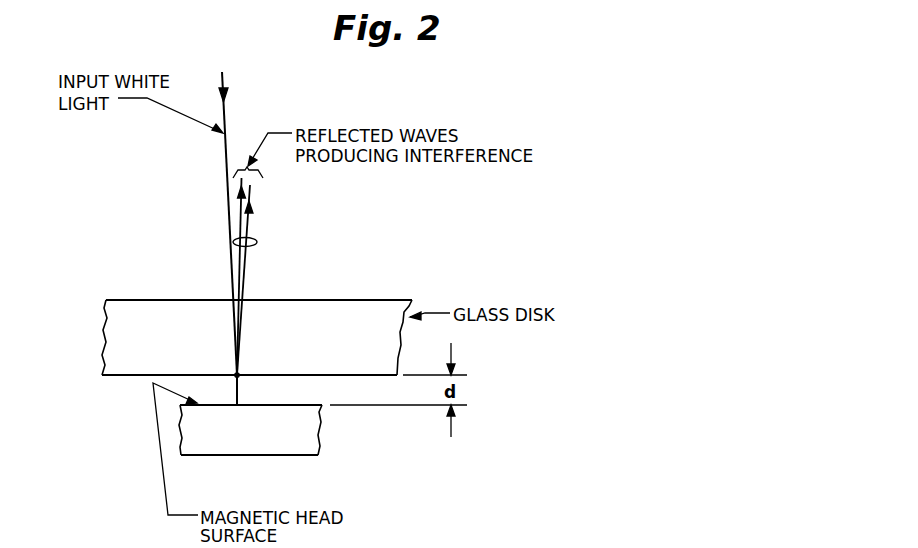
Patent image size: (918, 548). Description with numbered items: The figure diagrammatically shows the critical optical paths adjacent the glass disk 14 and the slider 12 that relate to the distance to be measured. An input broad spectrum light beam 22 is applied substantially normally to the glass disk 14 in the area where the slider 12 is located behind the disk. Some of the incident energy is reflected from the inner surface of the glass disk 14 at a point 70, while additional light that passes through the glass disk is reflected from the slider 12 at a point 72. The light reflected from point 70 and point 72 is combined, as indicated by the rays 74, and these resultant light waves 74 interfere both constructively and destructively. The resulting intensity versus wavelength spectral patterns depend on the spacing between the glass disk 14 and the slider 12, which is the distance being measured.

The slider 12 is at (282, 447).
The glass disk 14 is at (159, 303).
The input broad spectrum light beam 22 is at (228, 203).
The point 70 is at (242, 378).
The point 72 is at (235, 403).
The rays 74 is at (257, 243).